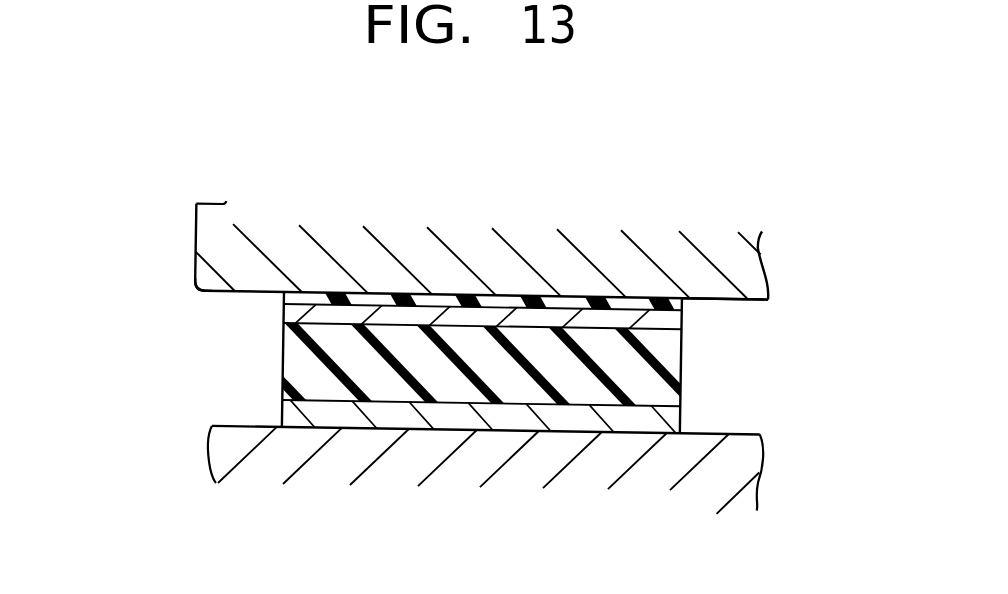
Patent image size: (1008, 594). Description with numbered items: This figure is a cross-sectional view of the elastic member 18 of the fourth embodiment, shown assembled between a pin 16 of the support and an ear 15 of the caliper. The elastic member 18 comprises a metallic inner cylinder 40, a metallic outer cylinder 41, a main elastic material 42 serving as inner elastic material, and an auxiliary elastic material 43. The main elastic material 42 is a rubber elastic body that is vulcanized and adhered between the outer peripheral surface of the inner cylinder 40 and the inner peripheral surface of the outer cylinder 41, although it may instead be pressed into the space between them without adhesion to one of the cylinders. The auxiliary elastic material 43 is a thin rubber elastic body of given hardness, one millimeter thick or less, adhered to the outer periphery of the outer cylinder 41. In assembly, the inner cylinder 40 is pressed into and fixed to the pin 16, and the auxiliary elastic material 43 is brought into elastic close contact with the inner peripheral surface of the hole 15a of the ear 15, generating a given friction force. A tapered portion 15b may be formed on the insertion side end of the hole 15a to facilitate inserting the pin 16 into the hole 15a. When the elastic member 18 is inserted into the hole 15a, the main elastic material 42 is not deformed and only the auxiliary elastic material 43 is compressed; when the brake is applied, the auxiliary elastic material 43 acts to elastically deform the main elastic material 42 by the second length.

The ear 15 is at (210, 238).
The hole 15a is at (743, 303).
The tapered portion 15b is at (203, 292).
The pin 16 is at (738, 462).
The elastic member 18 is at (502, 349).
The inner cylinder 40 is at (509, 413).
The outer cylinder 41 is at (672, 322).
The main elastic material 42 is at (668, 357).
The auxiliary elastic material 43 is at (562, 300).